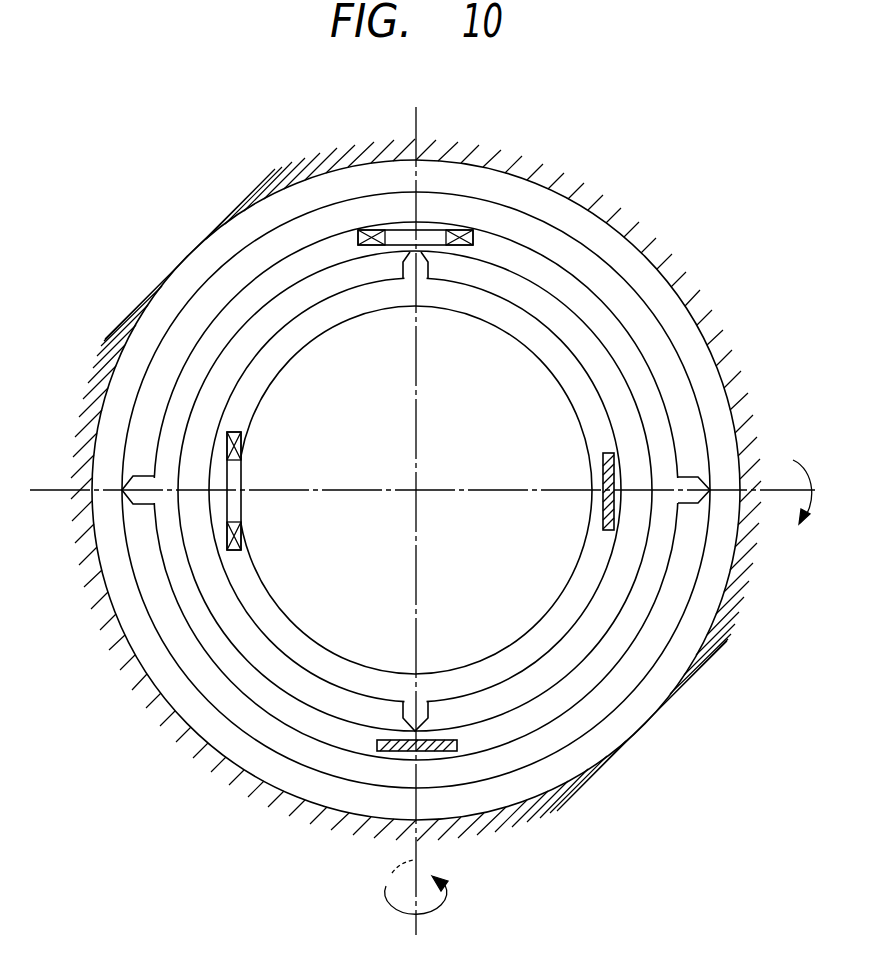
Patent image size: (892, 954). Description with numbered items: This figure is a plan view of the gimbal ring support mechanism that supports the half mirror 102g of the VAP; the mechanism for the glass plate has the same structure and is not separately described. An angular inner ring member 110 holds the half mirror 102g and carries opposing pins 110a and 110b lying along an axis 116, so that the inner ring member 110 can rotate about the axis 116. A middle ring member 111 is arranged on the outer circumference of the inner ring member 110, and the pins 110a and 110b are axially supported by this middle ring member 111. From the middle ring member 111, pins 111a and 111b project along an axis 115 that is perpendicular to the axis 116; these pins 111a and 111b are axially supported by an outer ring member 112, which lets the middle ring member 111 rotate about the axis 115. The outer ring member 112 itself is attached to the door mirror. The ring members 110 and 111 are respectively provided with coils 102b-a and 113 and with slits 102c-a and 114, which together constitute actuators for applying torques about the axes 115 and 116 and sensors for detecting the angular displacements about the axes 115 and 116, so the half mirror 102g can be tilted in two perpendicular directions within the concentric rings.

The coil 102b-a is at (228, 540).
The slit 102c-a is at (613, 515).
The half mirror 102g is at (533, 402).
The inner ring member 110 is at (508, 312).
The pin 110a is at (403, 264).
The pin 110b is at (403, 712).
The middle ring member 111 is at (571, 290).
The pin 111a is at (692, 497).
The pin 111b is at (143, 477).
The outer ring member 112 is at (462, 174).
The coil 113 is at (372, 229).
The slit 114 is at (442, 750).
The axis 115 is at (768, 466).
The axis 116 is at (392, 873).